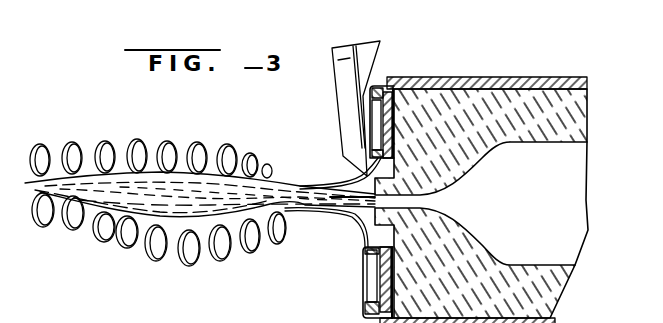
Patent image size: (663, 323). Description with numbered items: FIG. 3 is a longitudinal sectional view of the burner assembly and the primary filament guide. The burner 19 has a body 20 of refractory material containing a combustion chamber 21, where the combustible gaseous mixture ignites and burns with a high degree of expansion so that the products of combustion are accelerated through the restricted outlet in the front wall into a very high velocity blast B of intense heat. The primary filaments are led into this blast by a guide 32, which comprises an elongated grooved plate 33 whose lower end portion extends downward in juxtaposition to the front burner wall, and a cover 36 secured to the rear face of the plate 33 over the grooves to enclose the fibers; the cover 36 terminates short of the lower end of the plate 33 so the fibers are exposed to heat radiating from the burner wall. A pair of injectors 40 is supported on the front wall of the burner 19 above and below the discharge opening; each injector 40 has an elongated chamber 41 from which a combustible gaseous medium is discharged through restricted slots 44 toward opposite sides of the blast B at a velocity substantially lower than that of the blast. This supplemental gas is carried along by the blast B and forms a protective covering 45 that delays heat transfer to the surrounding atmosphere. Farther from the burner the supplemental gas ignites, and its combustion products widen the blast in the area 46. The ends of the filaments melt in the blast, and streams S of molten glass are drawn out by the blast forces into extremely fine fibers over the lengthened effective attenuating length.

The burner 19 is at (531, 68).
The body 20 is at (556, 312).
The combustion chamber 21 is at (542, 233).
The guide 32 is at (347, 68).
The plate 33 is at (340, 55).
The cover 36 is at (371, 47).
The injectors 40 is at (371, 105).
The elongated chamber 41 is at (385, 124).
The slots 44 is at (375, 147).
The protective covering 45 is at (308, 217).
The widened blast area 46 is at (230, 144).
The blast B is at (302, 195).
The streams S is at (325, 200).